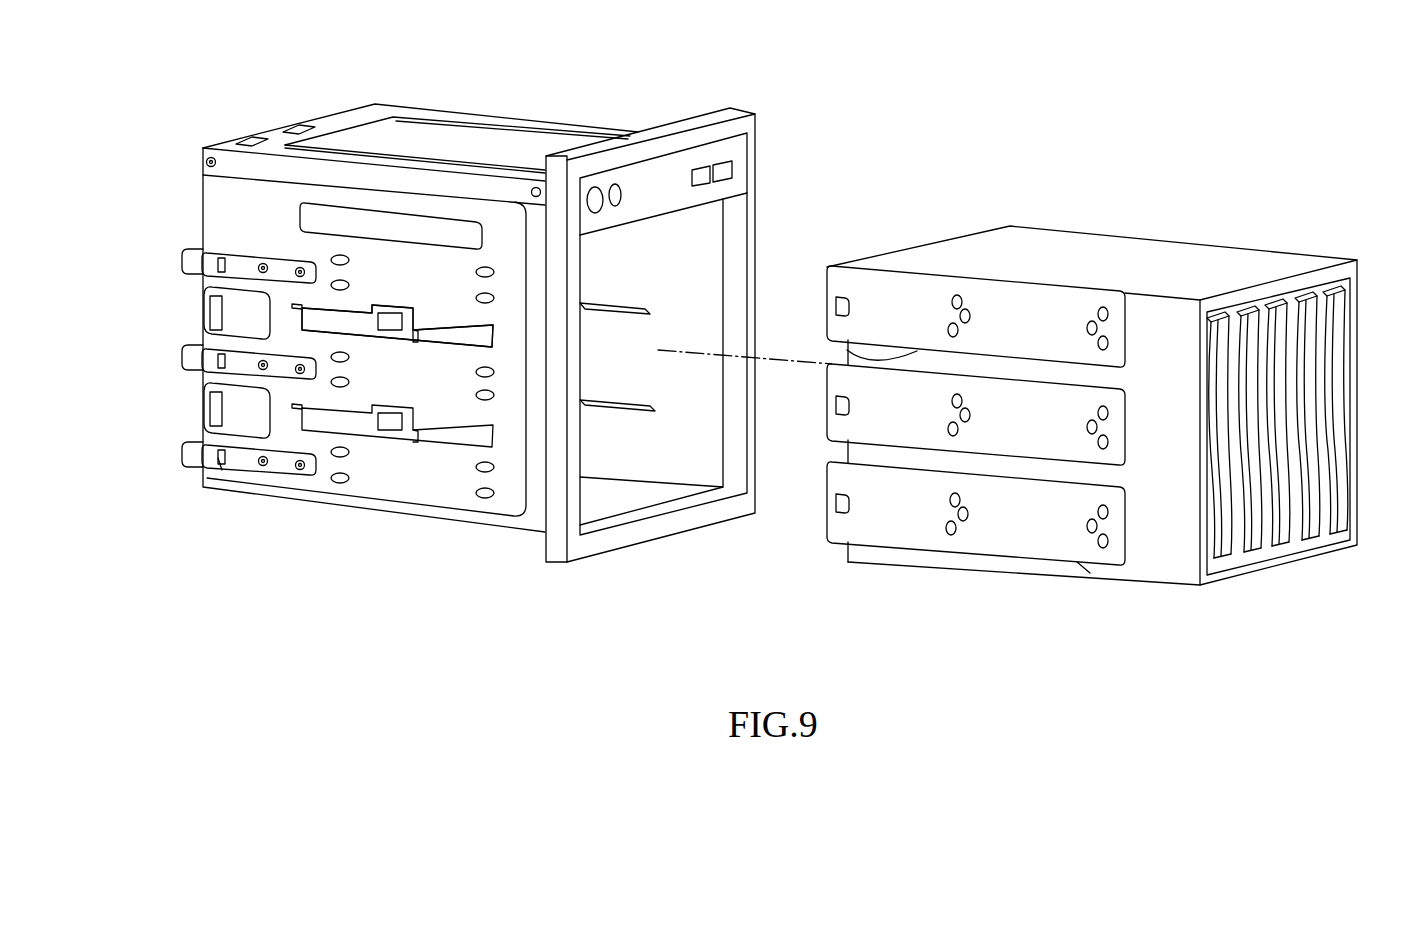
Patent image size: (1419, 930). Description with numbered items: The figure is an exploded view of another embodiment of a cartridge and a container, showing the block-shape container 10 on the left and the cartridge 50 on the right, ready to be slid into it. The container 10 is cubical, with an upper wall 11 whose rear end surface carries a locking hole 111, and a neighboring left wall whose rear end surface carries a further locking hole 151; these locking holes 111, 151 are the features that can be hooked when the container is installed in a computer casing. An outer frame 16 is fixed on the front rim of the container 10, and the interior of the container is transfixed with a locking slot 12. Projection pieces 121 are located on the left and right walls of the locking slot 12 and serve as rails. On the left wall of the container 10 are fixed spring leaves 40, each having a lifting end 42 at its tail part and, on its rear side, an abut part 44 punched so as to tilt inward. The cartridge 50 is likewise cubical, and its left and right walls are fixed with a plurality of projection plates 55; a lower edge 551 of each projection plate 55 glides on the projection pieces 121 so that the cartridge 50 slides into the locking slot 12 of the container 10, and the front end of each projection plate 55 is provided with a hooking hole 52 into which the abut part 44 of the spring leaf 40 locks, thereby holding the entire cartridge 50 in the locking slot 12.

The block-shape container 10 is at (600, 76).
The upper wall 11 is at (475, 133).
The locking hole 111 is at (297, 128).
The locking slot 12 is at (710, 233).
The projection piece 121 is at (634, 306).
The outer frame 16 is at (751, 123).
The spring leaf 40 is at (239, 256).
The lifting end 42 is at (200, 258).
The abut part 44 is at (222, 465).
The locking hole 151 is at (215, 400).
The cartridge 50 is at (1192, 253).
The hooking hole 52 is at (837, 302).
The projection plate 55 is at (878, 276).
The lower edge 551 is at (847, 351).